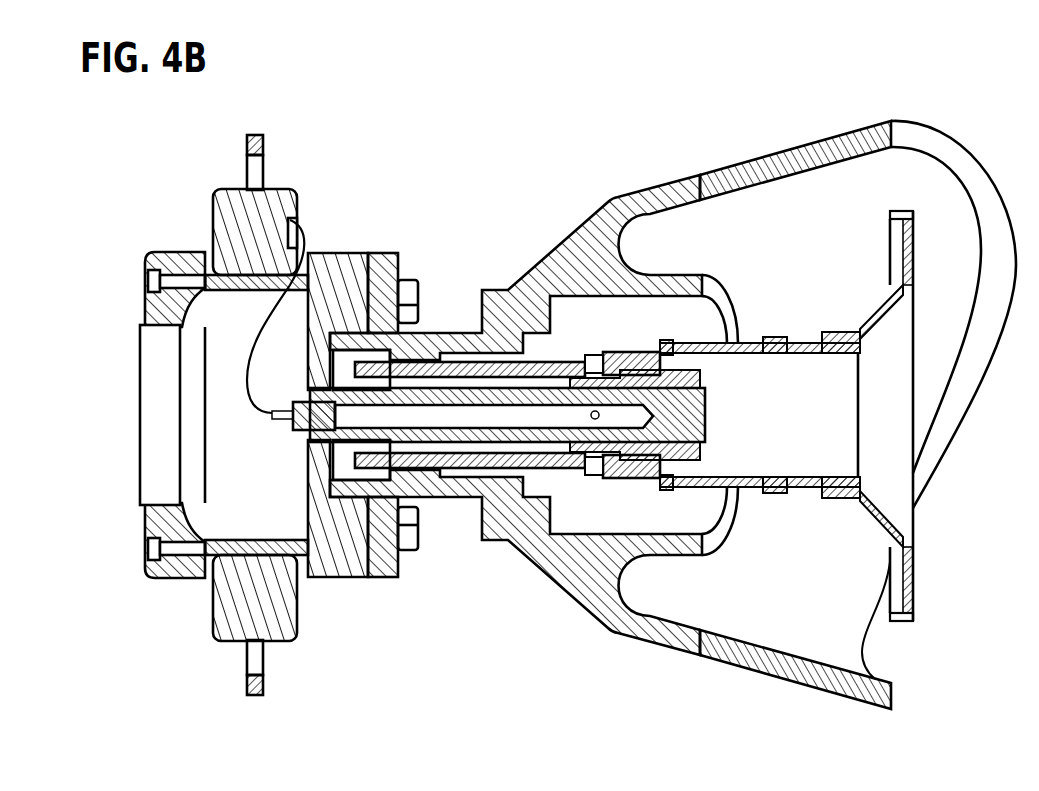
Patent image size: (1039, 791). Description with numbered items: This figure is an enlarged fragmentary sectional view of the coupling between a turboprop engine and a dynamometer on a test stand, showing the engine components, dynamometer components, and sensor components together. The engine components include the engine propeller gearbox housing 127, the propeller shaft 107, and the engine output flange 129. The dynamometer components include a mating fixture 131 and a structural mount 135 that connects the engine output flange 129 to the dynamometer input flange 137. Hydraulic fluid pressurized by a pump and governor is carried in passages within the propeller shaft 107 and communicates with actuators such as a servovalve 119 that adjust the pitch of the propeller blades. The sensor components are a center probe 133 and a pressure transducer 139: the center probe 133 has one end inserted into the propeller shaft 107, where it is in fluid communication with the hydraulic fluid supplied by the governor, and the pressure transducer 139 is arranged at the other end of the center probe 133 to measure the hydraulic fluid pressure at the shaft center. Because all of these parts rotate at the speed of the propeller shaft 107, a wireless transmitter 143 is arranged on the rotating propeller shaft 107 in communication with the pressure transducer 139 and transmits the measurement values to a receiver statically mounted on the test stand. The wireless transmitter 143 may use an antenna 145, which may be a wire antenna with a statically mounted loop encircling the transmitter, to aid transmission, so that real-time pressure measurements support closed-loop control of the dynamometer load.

The propeller shaft 107 is at (460, 386).
The servovalve 119 is at (596, 355).
The engine propeller gearbox housing 127 is at (802, 200).
The engine output flange 129 is at (388, 268).
The mating fixture 131 is at (313, 120).
The center probe 133 is at (527, 408).
The structural mount 135 is at (181, 578).
The dynamometer input flange 137 is at (343, 578).
The pressure transducer 139 is at (318, 350).
The wireless transmitter 143 is at (281, 190).
The antenna 145 is at (258, 134).